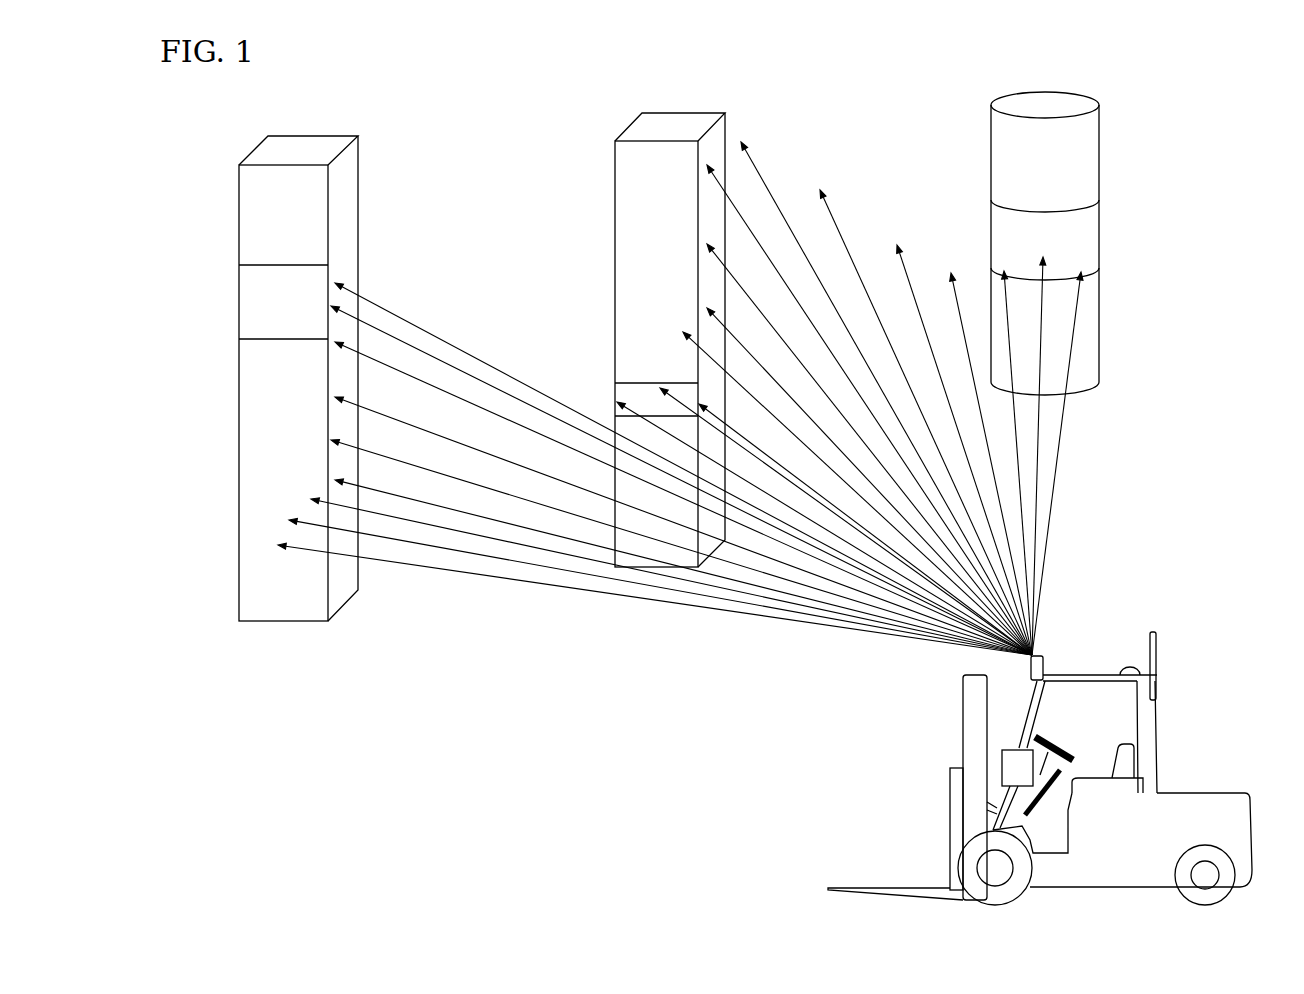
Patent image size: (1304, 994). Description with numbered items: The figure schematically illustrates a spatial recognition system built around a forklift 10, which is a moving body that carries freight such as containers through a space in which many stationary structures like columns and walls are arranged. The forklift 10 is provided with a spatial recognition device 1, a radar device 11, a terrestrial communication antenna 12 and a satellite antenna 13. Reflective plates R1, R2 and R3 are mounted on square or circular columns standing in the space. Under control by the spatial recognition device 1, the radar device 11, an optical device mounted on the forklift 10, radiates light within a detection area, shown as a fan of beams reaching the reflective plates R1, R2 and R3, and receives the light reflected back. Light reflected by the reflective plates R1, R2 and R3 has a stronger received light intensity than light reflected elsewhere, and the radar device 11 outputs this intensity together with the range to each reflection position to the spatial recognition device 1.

The spatial recognition device 1 is at (1005, 748).
The forklift 10 is at (1205, 793).
The radar device 11 is at (1043, 656).
The terrestrial communication antenna 12 is at (1157, 640).
The satellite antenna 13 is at (1130, 668).
The reflective plate R1 is at (255, 283).
The reflective plate R2 is at (630, 393).
The reflective plate R3 is at (1003, 230).